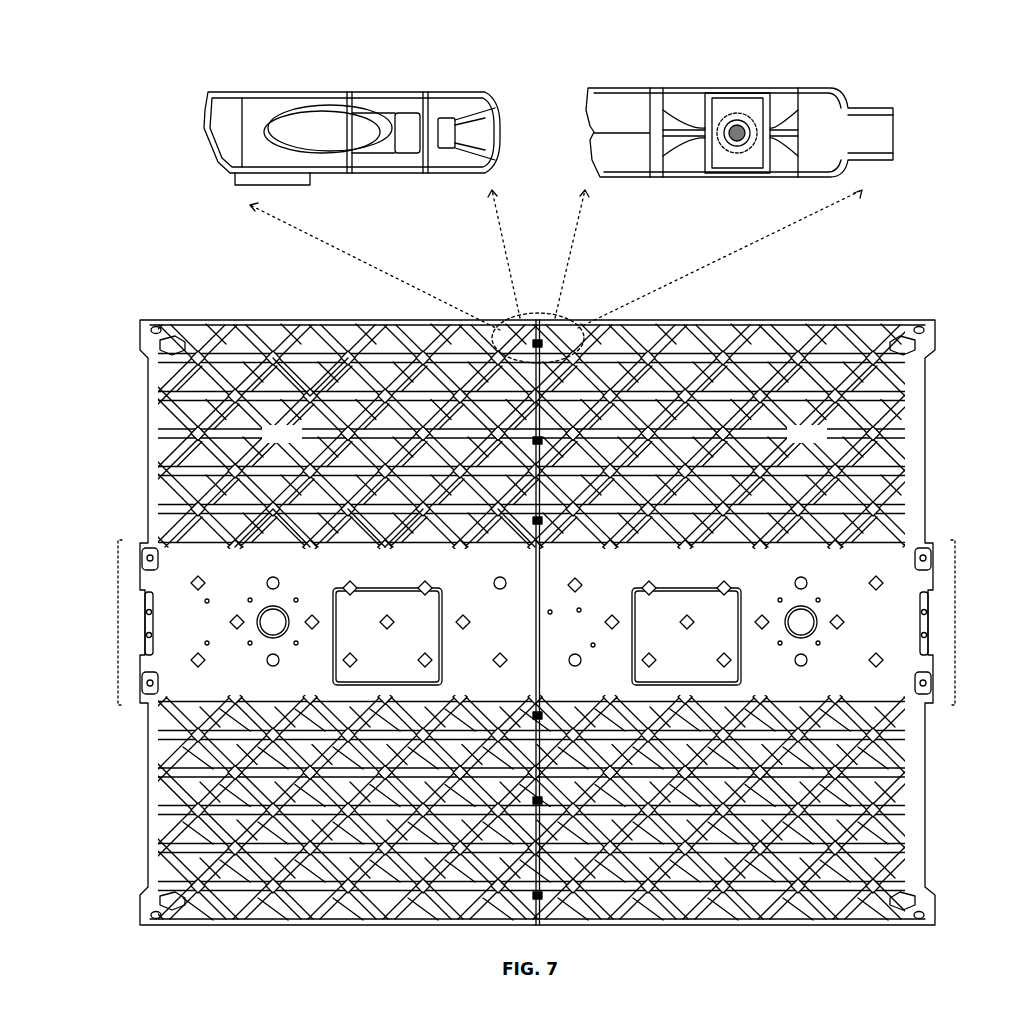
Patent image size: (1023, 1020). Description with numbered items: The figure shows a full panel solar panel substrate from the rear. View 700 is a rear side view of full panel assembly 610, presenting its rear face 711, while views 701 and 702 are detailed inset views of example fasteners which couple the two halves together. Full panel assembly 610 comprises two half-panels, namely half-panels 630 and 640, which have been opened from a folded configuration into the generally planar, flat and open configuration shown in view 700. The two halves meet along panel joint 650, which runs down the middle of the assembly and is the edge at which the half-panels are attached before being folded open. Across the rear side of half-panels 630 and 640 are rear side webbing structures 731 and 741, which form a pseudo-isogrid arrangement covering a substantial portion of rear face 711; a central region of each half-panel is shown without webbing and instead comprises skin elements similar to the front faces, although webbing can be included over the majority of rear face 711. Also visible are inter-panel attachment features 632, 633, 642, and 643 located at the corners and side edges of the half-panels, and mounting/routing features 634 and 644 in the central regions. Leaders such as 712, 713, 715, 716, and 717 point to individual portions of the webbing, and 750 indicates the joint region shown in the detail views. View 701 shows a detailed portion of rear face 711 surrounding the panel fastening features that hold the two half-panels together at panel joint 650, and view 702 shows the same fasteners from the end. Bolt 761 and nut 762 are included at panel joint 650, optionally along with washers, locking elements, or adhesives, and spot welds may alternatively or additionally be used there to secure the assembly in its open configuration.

The view 700 is at (169, 259).
The view 701 is at (485, 146).
The view 702 is at (853, 71).
The full panel assembly 610 is at (203, 309).
The half-panel 630 is at (258, 316).
The half-panel 640 is at (862, 310).
The inter-panel attachment feature 632 is at (142, 349).
The inter-panel attachment feature 642 is at (946, 341).
The inter-panel attachment feature 633 is at (118, 625).
The inter-panel attachment feature 643 is at (955, 625).
The mounting/routing feature 634 is at (262, 598).
The mounting/routing feature 644 is at (835, 592).
The rear face 711 is at (158, 423).
The lattice rib 712 is at (392, 520).
The lattice rib 713 is at (422, 528).
The lattice rib 715 is at (503, 513).
The lattice rib 716 is at (286, 505).
The lattice ribs 717 is at (357, 325).
The rear side webbing structure 731 is at (282, 435).
The rear side webbing structure 741 is at (807, 435).
The panel joint 650 is at (548, 601).
The connector joint 750 is at (433, 184).
The bolt 761 is at (411, 157).
The nut 762 is at (454, 154).